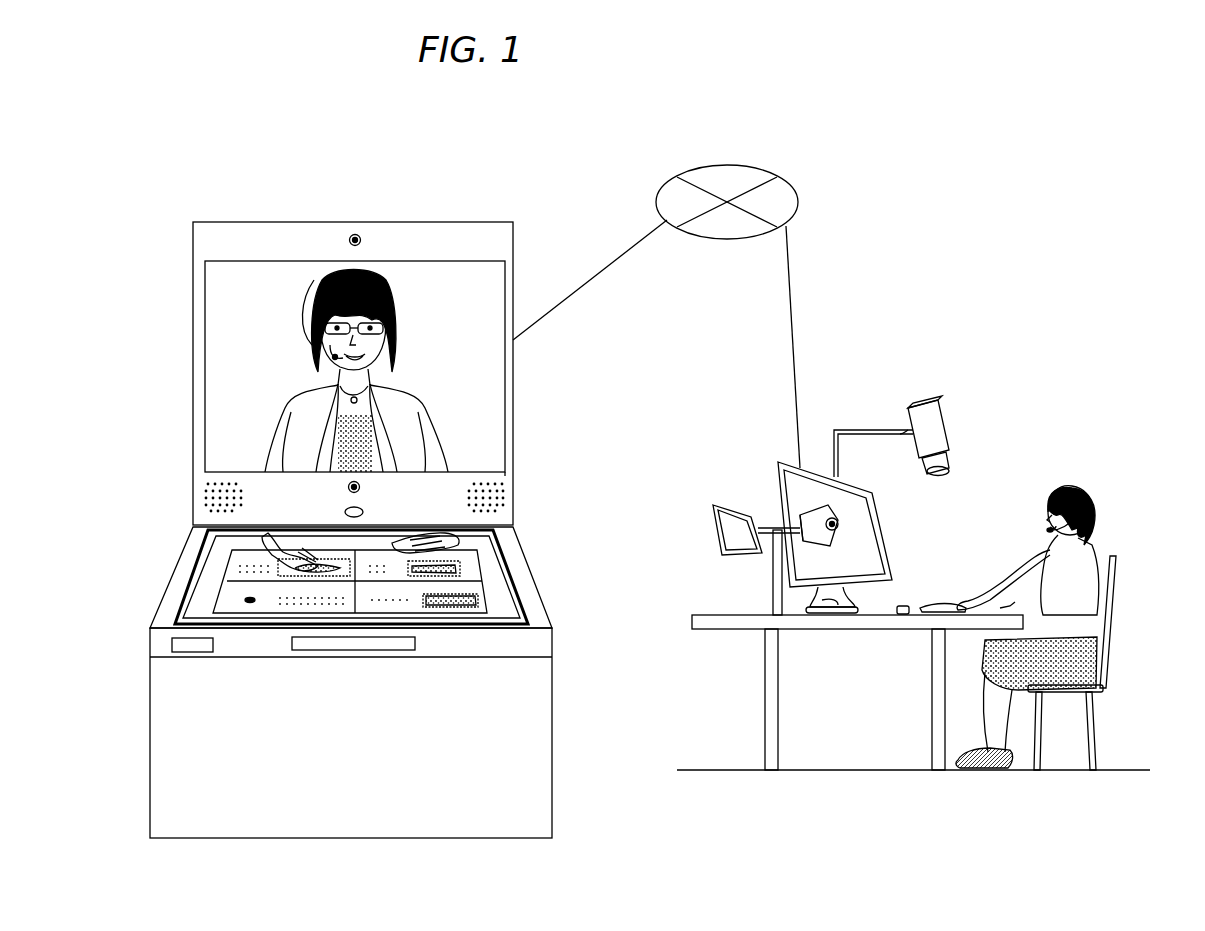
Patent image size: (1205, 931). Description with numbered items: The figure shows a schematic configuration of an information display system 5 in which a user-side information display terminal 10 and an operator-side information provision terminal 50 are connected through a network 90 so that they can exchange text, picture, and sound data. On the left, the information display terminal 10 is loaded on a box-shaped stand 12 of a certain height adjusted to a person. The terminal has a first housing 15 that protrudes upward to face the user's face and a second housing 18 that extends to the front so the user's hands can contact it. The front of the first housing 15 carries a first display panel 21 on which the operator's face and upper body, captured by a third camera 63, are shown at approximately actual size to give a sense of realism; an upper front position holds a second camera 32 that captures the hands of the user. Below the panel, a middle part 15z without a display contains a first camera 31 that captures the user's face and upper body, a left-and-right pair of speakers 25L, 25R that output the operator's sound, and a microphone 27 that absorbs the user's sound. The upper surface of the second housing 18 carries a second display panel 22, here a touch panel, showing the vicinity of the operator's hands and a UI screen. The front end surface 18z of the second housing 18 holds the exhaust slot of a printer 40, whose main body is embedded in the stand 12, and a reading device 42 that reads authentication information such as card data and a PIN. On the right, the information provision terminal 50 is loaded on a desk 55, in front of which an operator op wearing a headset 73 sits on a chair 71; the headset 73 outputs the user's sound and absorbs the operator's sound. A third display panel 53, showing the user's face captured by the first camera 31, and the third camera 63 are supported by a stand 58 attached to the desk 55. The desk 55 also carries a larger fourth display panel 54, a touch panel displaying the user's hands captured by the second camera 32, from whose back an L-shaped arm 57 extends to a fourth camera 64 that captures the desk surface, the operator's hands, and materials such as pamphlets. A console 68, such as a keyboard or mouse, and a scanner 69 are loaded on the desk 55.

The information display system 5 is at (932, 259).
The information display terminal 10 is at (193, 300).
The stand 12 is at (160, 725).
The first housing 15 is at (513, 412).
The middle part 15z is at (505, 478).
The second housing 18 is at (528, 580).
The front end surface 18z is at (552, 642).
The first display panel 21 is at (215, 372).
The second display panel 22 is at (205, 576).
The left speaker 25L is at (204, 491).
The right speaker 25R is at (490, 495).
The microphone 27 is at (345, 511).
The first camera 31 is at (361, 488).
The second camera 32 is at (349, 237).
The printer 40 is at (351, 650).
The reading device 42 is at (193, 652).
The information provision terminal 50 is at (1028, 432).
The third display panel 53 is at (722, 530).
The fourth display panel 54 is at (862, 498).
The desk 55 is at (720, 624).
The arm 57 is at (870, 430).
The stand 58 is at (773, 586).
The third camera 63 is at (797, 507).
The fourth camera 64 is at (950, 429).
The console 68 is at (940, 604).
The scanner 69 is at (903, 614).
The chair 71 is at (1110, 615).
The headset 73 is at (1073, 508).
The network 90 is at (657, 202).
The operator op is at (1092, 548).